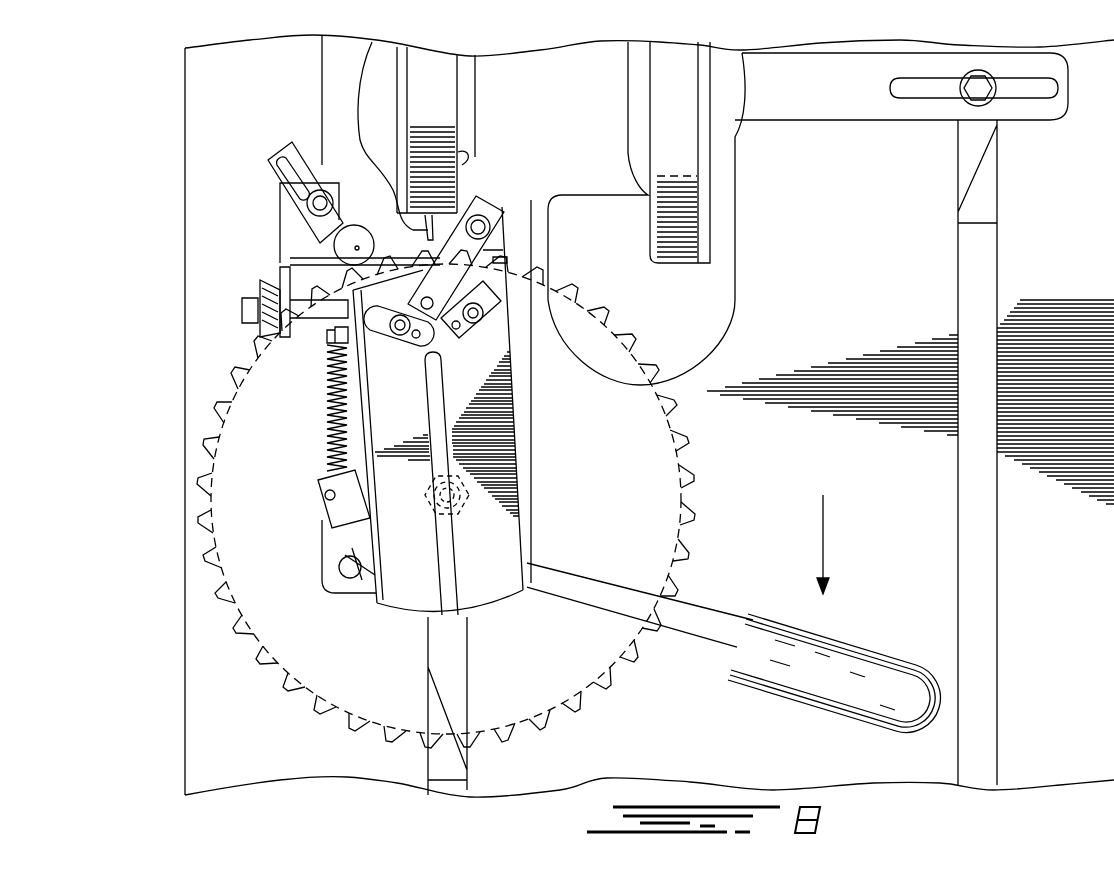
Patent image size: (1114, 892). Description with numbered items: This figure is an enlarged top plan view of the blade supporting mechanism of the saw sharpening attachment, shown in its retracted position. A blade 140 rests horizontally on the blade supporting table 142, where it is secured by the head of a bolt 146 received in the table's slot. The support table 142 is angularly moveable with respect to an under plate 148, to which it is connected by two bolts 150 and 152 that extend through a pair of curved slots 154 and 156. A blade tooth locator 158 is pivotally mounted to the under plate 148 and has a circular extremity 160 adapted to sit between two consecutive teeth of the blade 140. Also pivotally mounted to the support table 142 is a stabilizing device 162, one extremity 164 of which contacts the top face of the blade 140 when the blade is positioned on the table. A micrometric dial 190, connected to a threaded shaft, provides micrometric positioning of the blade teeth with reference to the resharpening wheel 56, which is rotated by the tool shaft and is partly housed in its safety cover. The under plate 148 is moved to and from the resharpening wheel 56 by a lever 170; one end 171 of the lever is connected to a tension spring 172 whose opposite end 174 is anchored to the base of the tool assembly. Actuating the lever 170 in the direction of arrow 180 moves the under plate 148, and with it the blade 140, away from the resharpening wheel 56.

The resharpening wheel 56 is at (390, 155).
The stabilizing device 162 is at (490, 203).
The blade tooth locator 158 is at (277, 170).
The circular extremity 160 is at (352, 243).
The curved slot 156 is at (382, 318).
The curved slot 154 is at (545, 300).
The micrometric dial 190 is at (240, 310).
The opposite end of tension spring 174 is at (333, 338).
The bolt 152 is at (398, 338).
The extremity of stabilizing device 164 is at (428, 320).
The bolt 150 is at (480, 322).
The tension spring 172 is at (327, 430).
The end of lever 171 is at (318, 478).
The bolt 146 is at (470, 492).
The blade supporting table 142 is at (497, 560).
The blade 140 is at (626, 542).
The arrow 180 is at (823, 527).
The lever 170 is at (693, 607).
The under plate 148 is at (358, 560).